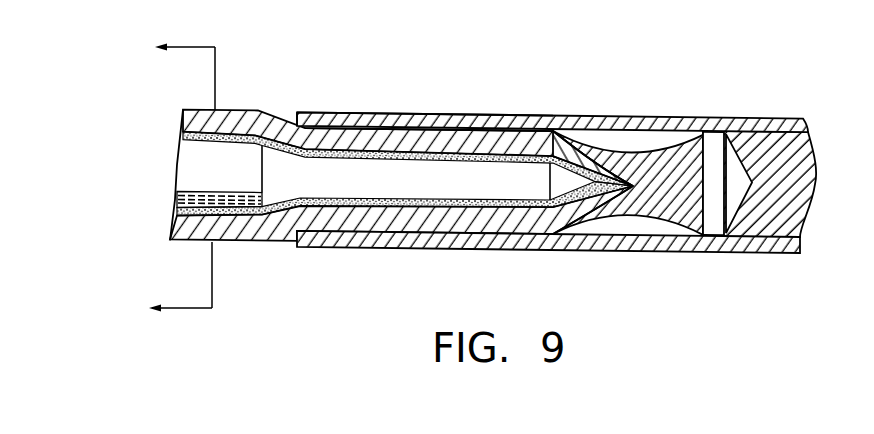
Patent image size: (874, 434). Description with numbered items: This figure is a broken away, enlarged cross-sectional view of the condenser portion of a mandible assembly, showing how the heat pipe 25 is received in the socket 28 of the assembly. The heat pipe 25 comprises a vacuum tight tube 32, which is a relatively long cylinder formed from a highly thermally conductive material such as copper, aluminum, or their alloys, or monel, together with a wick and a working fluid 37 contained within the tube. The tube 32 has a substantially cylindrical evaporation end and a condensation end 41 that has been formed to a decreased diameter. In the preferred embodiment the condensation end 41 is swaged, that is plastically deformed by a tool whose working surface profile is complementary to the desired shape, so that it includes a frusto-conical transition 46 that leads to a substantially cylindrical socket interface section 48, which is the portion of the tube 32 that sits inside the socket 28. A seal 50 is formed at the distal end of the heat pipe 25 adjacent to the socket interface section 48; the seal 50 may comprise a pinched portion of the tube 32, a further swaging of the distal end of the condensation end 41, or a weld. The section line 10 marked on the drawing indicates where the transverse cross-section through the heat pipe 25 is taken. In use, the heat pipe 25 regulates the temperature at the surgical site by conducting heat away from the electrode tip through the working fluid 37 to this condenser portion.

The section line 10- 10 is at (207, 179).
The heat pipe 25 is at (181, 104).
The socket 28 is at (608, 108).
The vacuum tight tube 32 is at (252, 110).
The working fluid 37 is at (199, 194).
The condensation end 41 is at (385, 108).
The frusto-conical transition 46 is at (270, 231).
The socket interface section 48 is at (457, 136).
The seal 50 is at (678, 140).